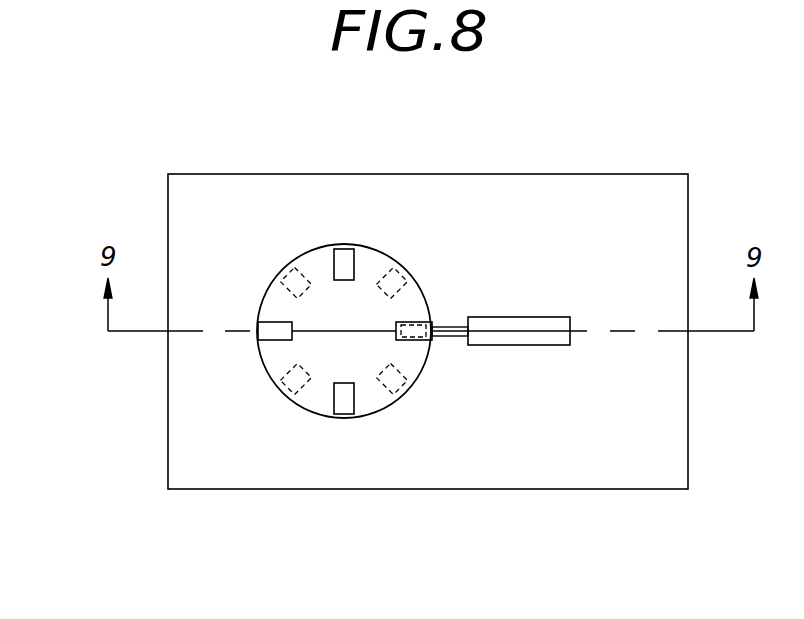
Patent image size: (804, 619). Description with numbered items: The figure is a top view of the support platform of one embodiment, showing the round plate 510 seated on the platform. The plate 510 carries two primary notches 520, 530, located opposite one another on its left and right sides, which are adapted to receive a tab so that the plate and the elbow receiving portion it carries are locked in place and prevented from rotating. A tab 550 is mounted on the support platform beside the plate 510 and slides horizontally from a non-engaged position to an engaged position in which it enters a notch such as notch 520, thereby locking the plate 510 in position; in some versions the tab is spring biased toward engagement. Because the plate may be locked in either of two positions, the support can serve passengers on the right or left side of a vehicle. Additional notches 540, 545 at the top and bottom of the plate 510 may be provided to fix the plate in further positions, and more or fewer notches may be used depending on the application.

The plate 510 is at (313, 250).
The notch 520 is at (410, 340).
The notch 530 is at (271, 340).
The additional notch 540 is at (345, 262).
The additional notch 545 is at (343, 403).
The tab 550 is at (450, 327).